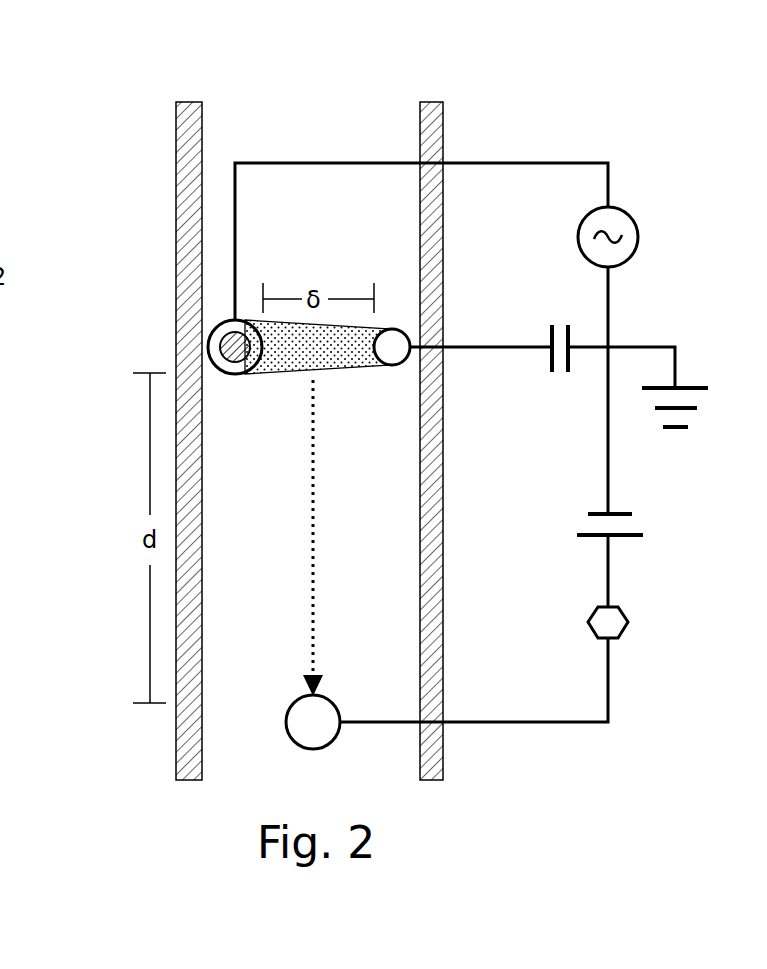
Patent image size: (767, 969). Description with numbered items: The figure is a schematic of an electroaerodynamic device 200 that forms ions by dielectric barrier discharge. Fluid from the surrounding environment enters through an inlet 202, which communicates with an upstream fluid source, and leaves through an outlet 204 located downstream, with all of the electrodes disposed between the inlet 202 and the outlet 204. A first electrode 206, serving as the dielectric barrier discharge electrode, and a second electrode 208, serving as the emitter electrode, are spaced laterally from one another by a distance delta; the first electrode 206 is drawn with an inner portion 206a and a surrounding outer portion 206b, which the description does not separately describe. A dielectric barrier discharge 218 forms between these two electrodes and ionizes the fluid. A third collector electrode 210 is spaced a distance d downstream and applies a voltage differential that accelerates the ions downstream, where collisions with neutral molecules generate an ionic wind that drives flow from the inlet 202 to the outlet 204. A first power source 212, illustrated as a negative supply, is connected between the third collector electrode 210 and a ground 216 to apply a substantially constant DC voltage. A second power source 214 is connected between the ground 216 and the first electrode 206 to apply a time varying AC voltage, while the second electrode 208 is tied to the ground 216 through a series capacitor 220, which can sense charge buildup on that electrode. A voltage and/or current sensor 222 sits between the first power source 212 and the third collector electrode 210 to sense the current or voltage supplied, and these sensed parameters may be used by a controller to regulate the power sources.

The electroaerodynamic device 200 is at (118, 101).
The inlet 202 is at (244, 94).
The outlet 204 is at (241, 778).
The first electrode 206 is at (220, 313).
The electrode core 206a is at (221, 334).
The electrode coating 206b is at (226, 348).
The second electrode 208 is at (392, 365).
The third collector electrode 210 is at (333, 700).
The first power source 212 is at (633, 537).
The second power source 214 is at (628, 210).
The ground 216 is at (680, 428).
The dielectric barrier discharge 218 is at (297, 373).
The capacitor 220 is at (550, 362).
The voltage and/or current sensor 222 is at (623, 632).